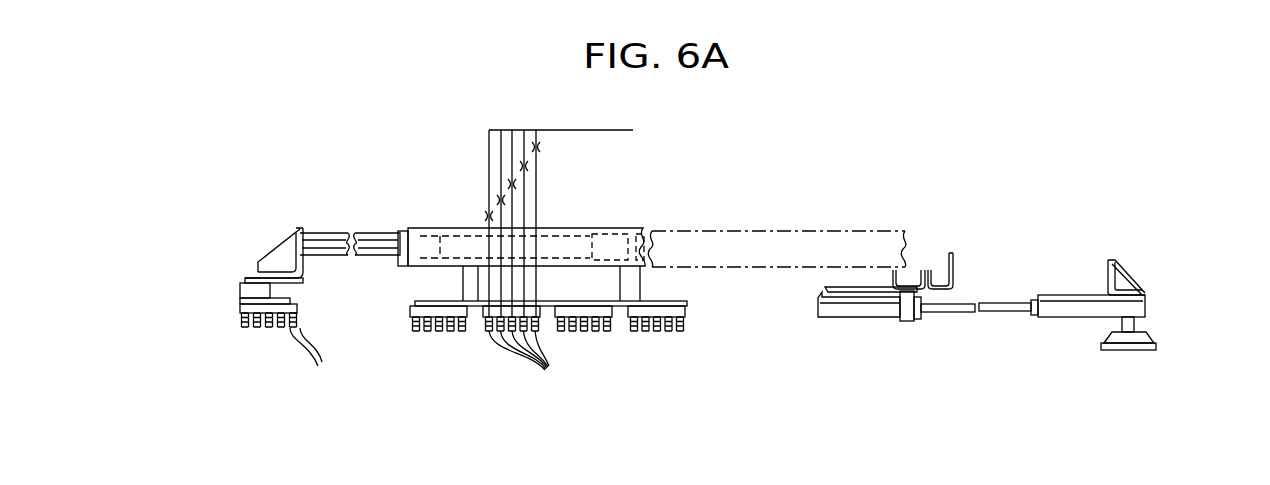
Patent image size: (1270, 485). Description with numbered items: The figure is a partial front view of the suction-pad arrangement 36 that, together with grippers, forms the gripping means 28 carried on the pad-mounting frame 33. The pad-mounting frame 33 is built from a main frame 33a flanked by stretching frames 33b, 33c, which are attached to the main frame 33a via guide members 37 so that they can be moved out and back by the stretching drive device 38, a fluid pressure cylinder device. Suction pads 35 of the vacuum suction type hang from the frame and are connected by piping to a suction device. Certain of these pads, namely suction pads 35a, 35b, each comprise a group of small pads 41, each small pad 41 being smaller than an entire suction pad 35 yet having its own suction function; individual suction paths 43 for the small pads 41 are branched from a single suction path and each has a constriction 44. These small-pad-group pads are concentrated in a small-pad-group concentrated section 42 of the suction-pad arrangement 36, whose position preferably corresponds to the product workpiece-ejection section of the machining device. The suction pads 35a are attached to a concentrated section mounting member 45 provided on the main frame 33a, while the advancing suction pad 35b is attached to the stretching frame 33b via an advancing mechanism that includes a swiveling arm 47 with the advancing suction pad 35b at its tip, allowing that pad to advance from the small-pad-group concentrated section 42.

The gripping means 28 is at (1162, 334).
The pad-mounting frame 33 is at (626, 212).
The main frame 33a is at (650, 228).
The stretching frame 33b is at (300, 242).
The stretching frame 33c is at (1116, 262).
The suction pad 35 is at (1124, 352).
The suction pad 35a is at (425, 339).
The advancing suction pad 35b is at (261, 343).
The suction-pad arrangement 36 is at (1160, 360).
The guide member 37 is at (372, 232).
The stretching drive device 38 is at (868, 312).
The small pad 41 is at (425, 363).
The small-pad-group concentrated section 42 is at (652, 342).
The suction path 43 is at (514, 212).
The constriction 44 is at (487, 214).
The concentrated section mounting member 45 is at (676, 302).
The swiveling arm 47 is at (244, 290).